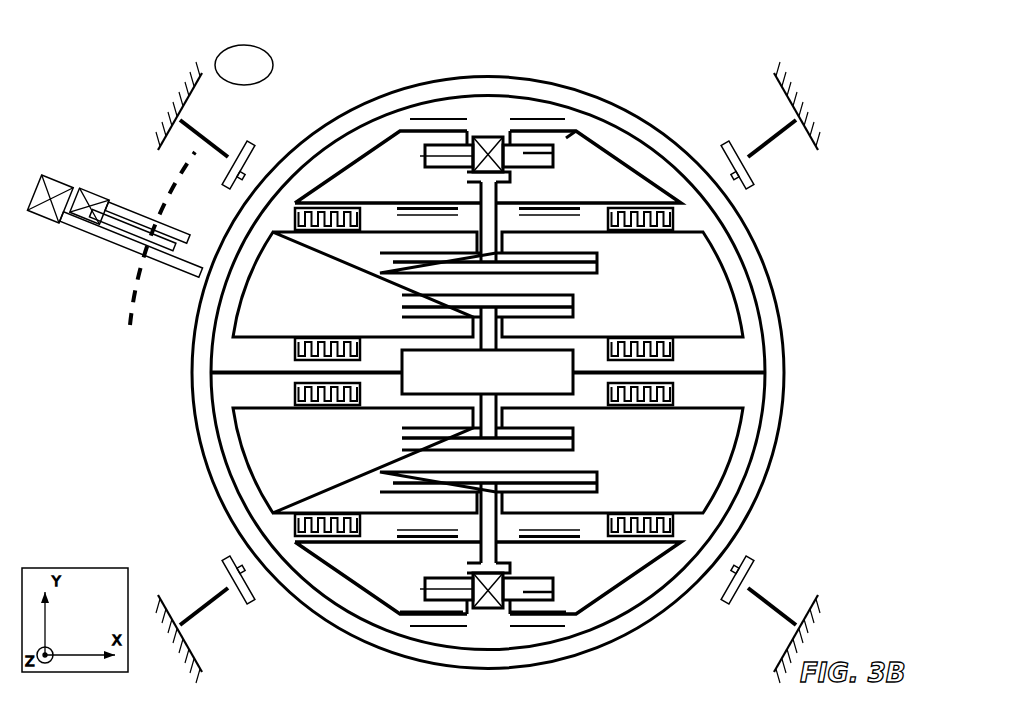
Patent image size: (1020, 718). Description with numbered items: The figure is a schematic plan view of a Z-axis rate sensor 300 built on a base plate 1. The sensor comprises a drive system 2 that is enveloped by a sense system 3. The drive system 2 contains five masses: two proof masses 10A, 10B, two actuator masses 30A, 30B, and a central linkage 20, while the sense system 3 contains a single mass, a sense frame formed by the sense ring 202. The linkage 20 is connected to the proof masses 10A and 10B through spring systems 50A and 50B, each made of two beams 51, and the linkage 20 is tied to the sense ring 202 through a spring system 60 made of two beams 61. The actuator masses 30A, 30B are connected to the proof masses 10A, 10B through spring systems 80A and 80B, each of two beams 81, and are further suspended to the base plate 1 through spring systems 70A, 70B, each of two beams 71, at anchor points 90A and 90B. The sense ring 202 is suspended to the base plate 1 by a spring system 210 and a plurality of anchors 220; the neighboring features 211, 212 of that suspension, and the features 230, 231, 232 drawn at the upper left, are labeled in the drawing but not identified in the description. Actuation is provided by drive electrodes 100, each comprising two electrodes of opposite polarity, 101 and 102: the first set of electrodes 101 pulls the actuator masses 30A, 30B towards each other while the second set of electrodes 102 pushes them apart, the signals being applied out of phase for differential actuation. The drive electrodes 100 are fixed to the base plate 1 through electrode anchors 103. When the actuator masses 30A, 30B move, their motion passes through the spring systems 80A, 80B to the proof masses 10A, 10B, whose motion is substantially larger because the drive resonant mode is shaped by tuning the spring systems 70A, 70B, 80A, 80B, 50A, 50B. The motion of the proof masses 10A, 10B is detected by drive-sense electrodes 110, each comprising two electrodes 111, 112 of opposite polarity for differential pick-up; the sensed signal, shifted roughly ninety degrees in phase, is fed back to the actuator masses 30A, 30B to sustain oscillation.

The base plate 1 is at (244, 65).
The drive system 2 is at (580, 172).
The sense system 3 is at (186, 371).
The proof mass 10A is at (670, 288).
The proof mass 10B is at (680, 463).
The linkage 20 is at (552, 378).
The actuator mass 30A is at (590, 146).
The actuator mass 30B is at (582, 600).
The spring system 50A is at (545, 309).
The spring system 50B is at (542, 436).
The beam 51 is at (447, 310).
The spring system 60 is at (665, 374).
The beam 61 is at (378, 364).
The spring system 70A is at (546, 152).
The spring system 70B is at (546, 592).
The beam 71 is at (528, 152).
The spring system 80A is at (578, 266).
The spring system 80B is at (430, 477).
The beam 81 is at (572, 262).
The anchor point 90A is at (491, 138).
The anchor point 90B is at (494, 582).
The drive electrode 100 is at (423, 534).
The electrode 101 is at (420, 210).
The electrode 102 is at (420, 115).
The electrode anchor 103 is at (563, 204).
The drive-sense electrode 110 is at (302, 462).
The electrode 111 is at (314, 355).
The electrode 112 is at (320, 228).
The sense ring 202 is at (746, 508).
The spring system 210 is at (162, 577).
The stopper arm 211 is at (222, 611).
The stopper paddle 212 is at (224, 574).
The anchor 220 is at (818, 101).
The gap arc 230 is at (122, 182).
The folded spring 231 is at (120, 224).
The spring anchor 232 is at (42, 216).
The Z-axis rate sensor 300 is at (368, 63).